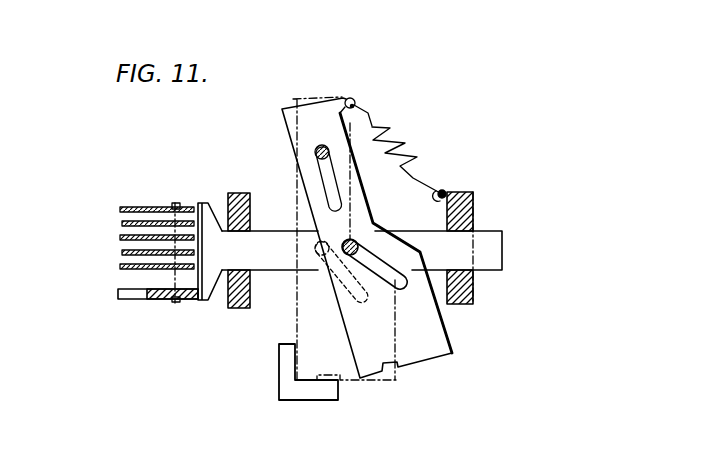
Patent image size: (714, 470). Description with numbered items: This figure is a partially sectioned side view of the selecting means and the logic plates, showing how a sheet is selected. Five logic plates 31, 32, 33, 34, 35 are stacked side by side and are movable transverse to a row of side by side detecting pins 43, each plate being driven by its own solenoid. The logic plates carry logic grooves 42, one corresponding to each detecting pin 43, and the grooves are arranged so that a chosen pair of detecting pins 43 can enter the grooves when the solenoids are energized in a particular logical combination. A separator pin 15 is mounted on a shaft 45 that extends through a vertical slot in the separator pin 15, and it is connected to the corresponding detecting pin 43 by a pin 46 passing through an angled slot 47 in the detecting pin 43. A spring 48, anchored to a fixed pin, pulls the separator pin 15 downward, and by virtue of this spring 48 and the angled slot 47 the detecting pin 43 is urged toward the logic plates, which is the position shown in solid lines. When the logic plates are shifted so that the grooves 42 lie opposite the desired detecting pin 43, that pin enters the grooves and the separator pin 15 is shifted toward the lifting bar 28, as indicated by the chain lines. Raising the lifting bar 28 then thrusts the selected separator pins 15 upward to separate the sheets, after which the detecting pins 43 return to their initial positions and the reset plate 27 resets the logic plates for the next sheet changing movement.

The separator pin 15 is at (323, 113).
The reset plate 27 is at (160, 300).
The lifting bar 28 is at (298, 394).
The logic plate 31 is at (131, 207).
The logic plate 32 is at (122, 223).
The logic plate 33 is at (120, 238).
The logic plate 34 is at (122, 254).
The logic plate 35 is at (120, 268).
The logic groove 42 is at (179, 203).
The detecting pin 43 is at (498, 240).
The shaft 45 is at (326, 153).
The pin 46 is at (357, 246).
The angled slot 47 is at (408, 279).
The spring 48 is at (418, 158).